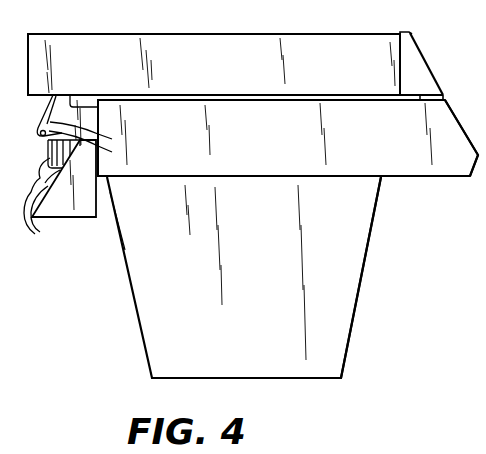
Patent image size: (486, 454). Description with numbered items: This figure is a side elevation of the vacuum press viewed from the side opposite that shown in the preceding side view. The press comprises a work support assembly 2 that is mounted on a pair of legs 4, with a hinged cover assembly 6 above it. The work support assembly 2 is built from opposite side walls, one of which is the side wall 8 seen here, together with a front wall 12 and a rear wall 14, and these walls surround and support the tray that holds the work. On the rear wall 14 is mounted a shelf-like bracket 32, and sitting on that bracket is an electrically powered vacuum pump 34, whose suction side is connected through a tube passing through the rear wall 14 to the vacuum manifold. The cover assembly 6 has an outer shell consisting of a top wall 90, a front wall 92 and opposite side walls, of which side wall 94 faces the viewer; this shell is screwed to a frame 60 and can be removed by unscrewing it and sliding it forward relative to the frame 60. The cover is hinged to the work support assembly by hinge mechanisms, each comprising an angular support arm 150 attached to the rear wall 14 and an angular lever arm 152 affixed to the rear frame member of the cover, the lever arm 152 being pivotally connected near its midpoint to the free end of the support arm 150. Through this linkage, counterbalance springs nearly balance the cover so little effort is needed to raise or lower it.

The work support assembly 2 is at (433, 178).
The legs 4 is at (338, 245).
The hinged cover assembly 6 is at (418, 33).
The side wall 8 is at (294, 152).
The front wall 12 is at (460, 121).
The rear wall 14 is at (93, 124).
The shelf-like bracket 32 is at (77, 218).
The vacuum pump 34 is at (35, 234).
The frame 60 is at (464, 68).
The top wall 90 is at (231, 33).
The front wall 92 is at (420, 53).
The side wall 94 is at (202, 79).
The angular support arm 150 is at (473, 178).
The angular lever arm 152 is at (97, 146).